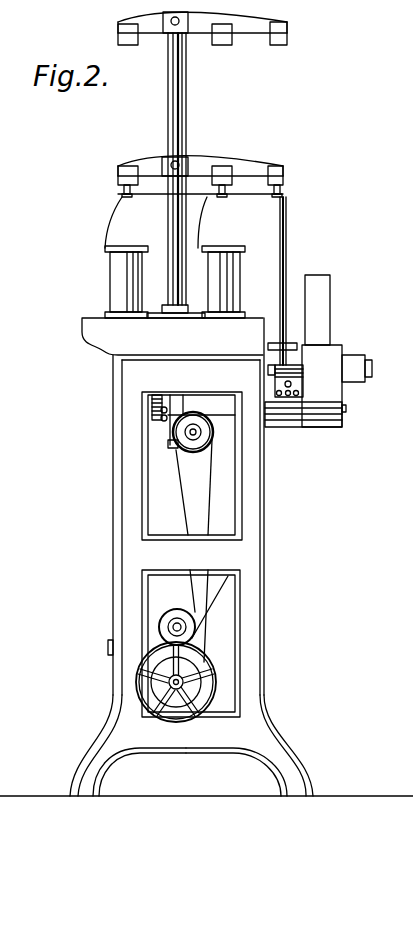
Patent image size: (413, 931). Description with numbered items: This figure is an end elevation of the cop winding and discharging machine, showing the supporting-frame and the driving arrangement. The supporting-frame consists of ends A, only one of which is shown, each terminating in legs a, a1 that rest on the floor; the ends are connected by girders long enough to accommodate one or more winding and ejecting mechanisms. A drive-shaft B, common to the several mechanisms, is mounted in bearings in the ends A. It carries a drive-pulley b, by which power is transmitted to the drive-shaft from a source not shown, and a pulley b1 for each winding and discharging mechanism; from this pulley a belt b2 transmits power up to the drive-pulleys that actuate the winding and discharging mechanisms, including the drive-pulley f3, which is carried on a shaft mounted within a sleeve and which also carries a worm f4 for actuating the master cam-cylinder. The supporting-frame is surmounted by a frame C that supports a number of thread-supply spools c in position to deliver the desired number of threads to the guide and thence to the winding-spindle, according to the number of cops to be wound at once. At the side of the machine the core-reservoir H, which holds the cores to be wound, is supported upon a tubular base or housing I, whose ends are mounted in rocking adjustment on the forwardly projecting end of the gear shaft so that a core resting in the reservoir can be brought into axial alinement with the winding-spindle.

The thread-supply spools c is at (218, 283).
The frame C is at (172, 336).
The ends A is at (191, 557).
The leg a1 is at (137, 772).
The leg a is at (240, 772).
The worm f4 is at (175, 438).
The drive-pulley f3 is at (192, 448).
The belt b2 is at (213, 502).
The drive-pulley b is at (207, 660).
The drive-shaft B is at (185, 675).
The pulley b1 is at (205, 692).
The core-reservoir H is at (318, 318).
The tubular base or housing I is at (312, 428).